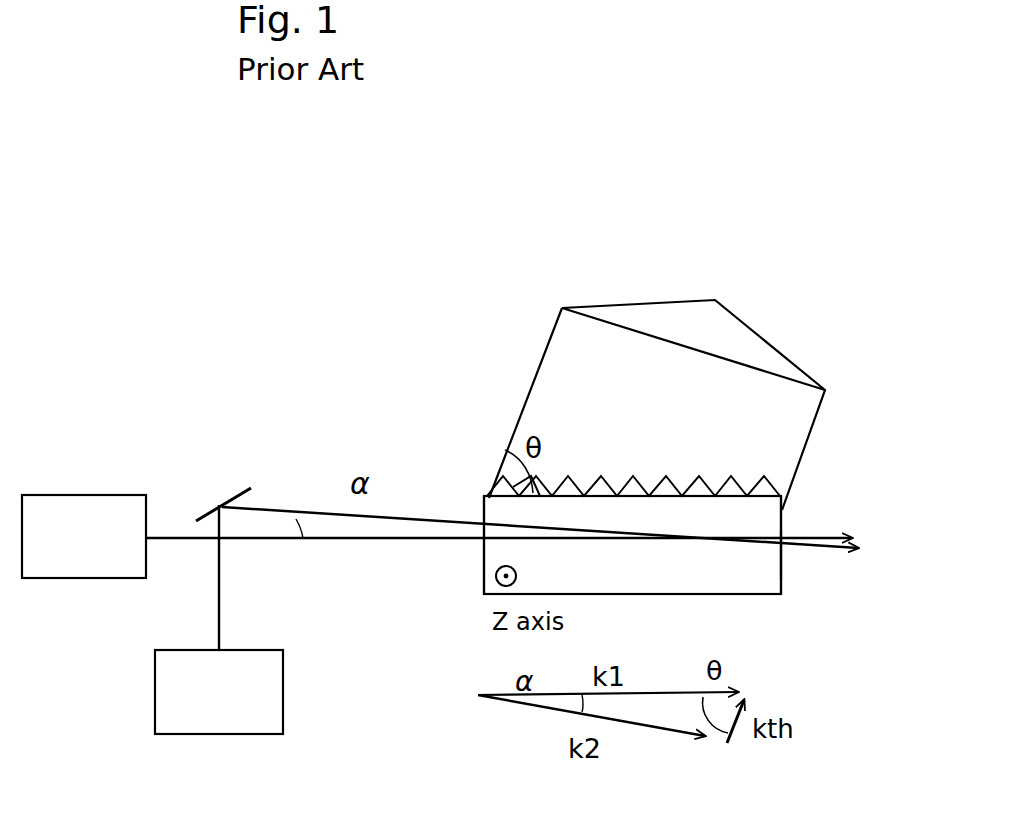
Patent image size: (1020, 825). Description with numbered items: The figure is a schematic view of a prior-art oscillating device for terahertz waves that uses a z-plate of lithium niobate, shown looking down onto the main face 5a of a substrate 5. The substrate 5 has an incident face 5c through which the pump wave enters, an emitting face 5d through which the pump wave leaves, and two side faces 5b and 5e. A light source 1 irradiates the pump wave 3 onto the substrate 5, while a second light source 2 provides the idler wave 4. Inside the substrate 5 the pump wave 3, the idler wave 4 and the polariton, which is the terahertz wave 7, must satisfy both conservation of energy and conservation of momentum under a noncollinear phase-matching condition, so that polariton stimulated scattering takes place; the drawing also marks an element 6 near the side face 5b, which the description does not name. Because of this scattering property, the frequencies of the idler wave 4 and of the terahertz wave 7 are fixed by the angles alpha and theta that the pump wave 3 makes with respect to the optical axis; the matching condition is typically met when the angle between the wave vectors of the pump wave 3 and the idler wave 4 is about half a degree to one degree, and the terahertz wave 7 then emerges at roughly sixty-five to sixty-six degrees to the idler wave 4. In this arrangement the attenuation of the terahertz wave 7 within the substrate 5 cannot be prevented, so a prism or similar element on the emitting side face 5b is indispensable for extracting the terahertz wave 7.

The light source 1 is at (86, 557).
The light source 2 is at (226, 712).
The pump wave 3 is at (358, 542).
The idler wave 4 is at (303, 535).
The substrate 5 is at (790, 508).
The main face 5a is at (783, 598).
The side face 5b is at (652, 492).
The incident face 5c is at (482, 510).
The emitting face 5d is at (783, 563).
The side face 5e is at (655, 596).
The acoustic wavefront 6 is at (578, 492).
The terahertz wave 7 is at (745, 340).